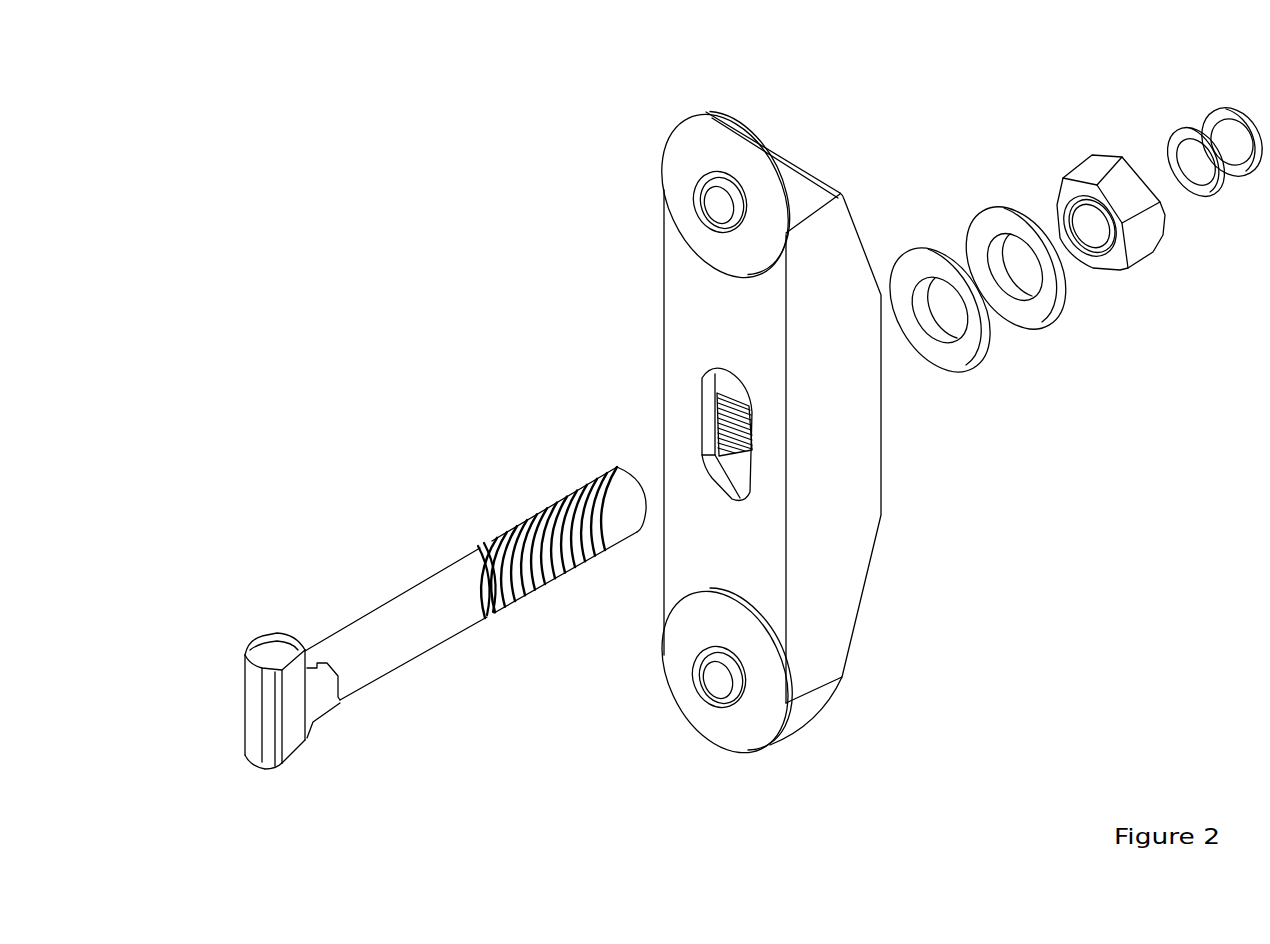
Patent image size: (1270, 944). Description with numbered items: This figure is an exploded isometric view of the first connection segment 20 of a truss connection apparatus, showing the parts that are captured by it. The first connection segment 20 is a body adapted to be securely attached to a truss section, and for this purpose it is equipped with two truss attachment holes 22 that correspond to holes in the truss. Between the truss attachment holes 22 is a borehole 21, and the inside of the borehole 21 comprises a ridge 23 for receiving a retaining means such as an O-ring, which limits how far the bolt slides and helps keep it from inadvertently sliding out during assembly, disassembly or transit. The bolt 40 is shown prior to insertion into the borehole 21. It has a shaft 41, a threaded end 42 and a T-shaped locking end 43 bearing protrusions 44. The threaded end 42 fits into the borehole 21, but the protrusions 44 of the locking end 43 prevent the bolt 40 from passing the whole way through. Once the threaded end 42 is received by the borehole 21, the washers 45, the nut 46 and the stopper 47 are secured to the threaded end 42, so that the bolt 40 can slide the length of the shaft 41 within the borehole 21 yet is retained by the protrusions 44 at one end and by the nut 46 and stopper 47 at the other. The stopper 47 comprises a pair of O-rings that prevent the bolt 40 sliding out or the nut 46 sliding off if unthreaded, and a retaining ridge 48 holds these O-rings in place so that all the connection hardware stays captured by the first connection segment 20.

The first connection segment 20 is at (759, 433).
The borehole 21 is at (715, 416).
The truss attachment holes 22 is at (712, 192).
The ridge 23 is at (733, 427).
The bolt 40 is at (412, 568).
The shaft 41 is at (582, 482).
The threaded end 42 is at (472, 579).
The locking end 43 is at (237, 720).
The protrusions 44 is at (262, 642).
The washers 45 is at (1038, 315).
The nut 46 is at (1138, 252).
The stopper 47 is at (1187, 123).
The retaining ridge 48 is at (603, 467).